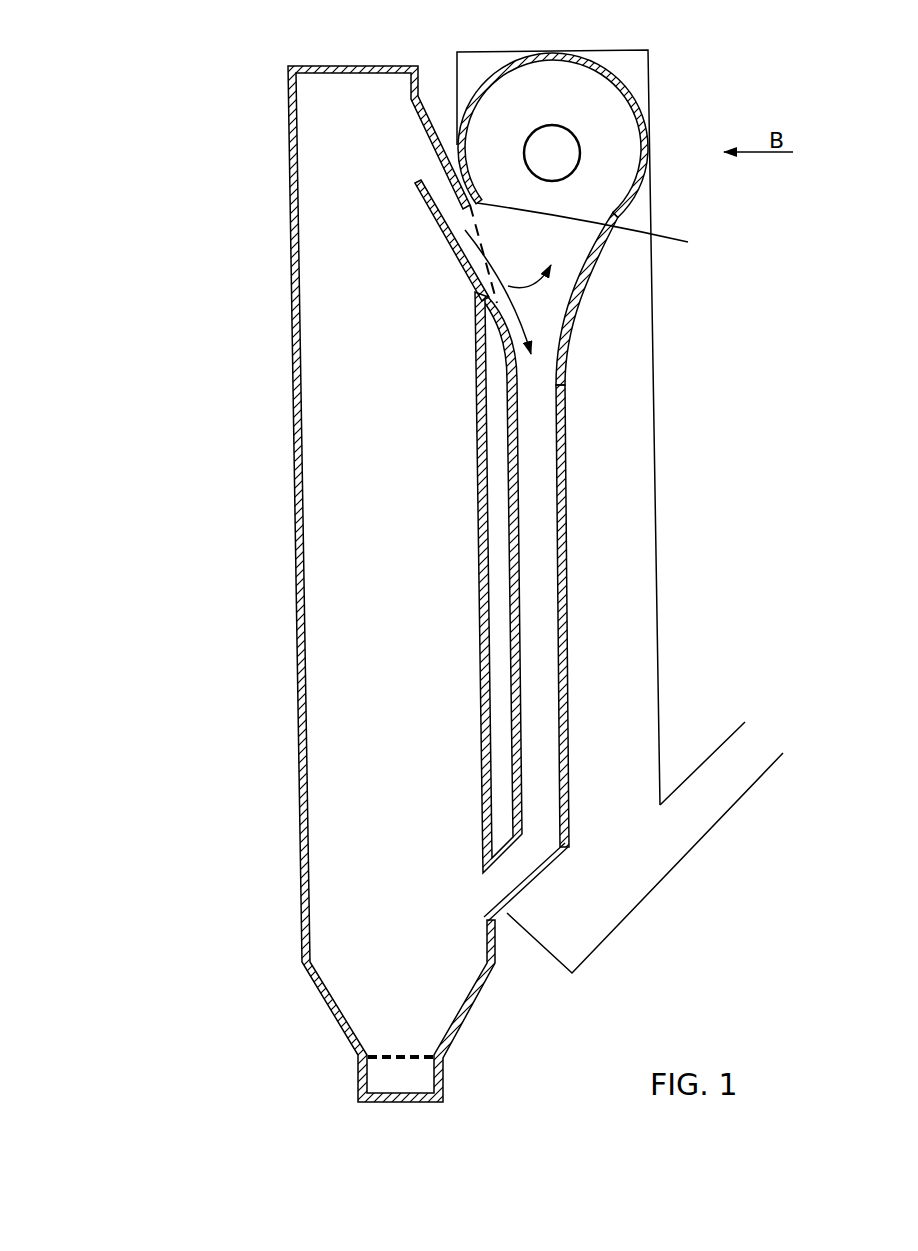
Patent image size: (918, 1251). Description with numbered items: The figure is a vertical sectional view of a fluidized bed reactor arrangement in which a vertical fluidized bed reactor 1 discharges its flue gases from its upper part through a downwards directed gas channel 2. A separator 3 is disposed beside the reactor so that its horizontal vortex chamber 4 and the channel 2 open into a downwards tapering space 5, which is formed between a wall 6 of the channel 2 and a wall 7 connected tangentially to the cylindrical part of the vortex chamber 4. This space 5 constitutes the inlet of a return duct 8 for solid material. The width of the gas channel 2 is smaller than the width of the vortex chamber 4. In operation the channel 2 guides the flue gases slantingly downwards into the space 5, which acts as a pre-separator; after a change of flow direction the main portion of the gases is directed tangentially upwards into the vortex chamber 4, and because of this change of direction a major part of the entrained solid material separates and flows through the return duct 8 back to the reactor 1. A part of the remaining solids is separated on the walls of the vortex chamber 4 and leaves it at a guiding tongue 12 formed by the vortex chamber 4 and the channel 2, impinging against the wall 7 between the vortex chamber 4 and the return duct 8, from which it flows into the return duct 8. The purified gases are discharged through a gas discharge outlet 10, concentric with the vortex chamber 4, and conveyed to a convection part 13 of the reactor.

The vertical fluidized bed reactor 1 is at (345, 512).
The gas channel 2 is at (435, 183).
The separator 3 is at (624, 64).
The vortex chamber 4 is at (607, 128).
The downwards tapering space 5 is at (545, 307).
The wall of the channel 6 is at (452, 268).
The wall 7 is at (585, 285).
The return duct 8 is at (543, 448).
The gas discharge outlet 10 is at (548, 145).
The guiding tongue 12 is at (597, 229).
The convection part 13 is at (625, 563).